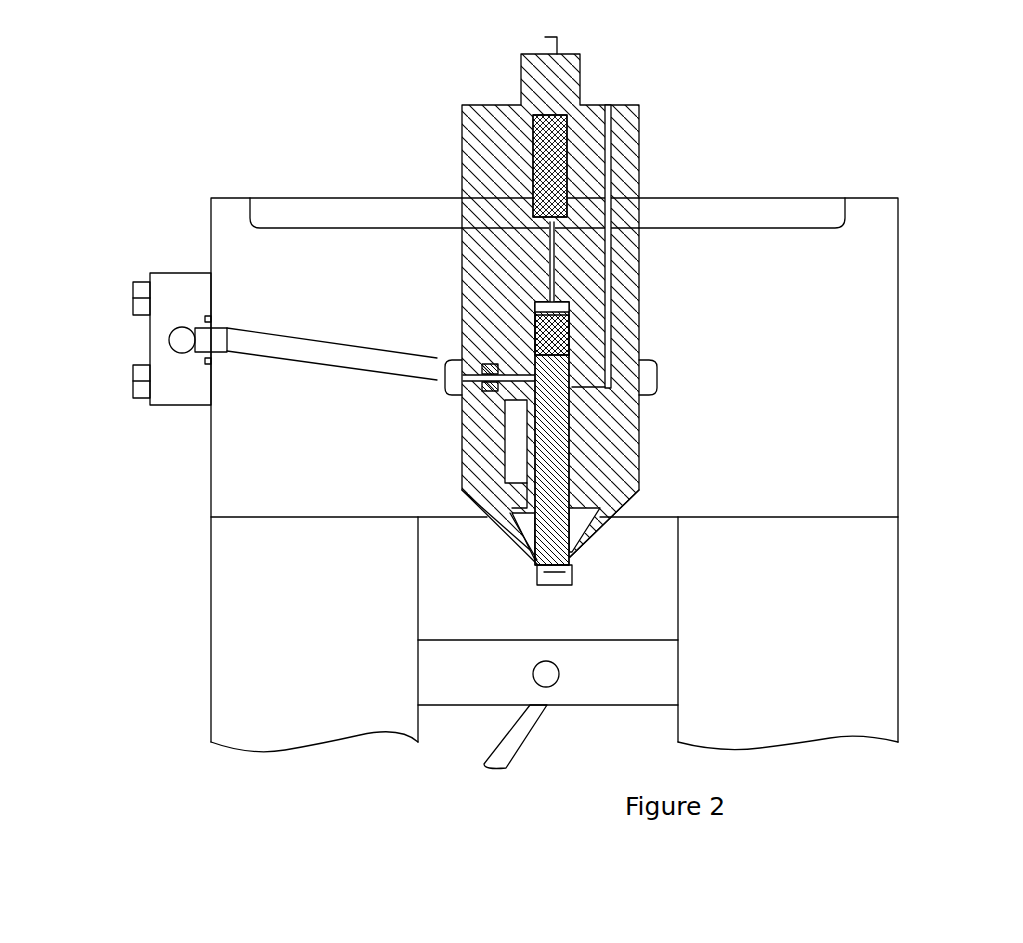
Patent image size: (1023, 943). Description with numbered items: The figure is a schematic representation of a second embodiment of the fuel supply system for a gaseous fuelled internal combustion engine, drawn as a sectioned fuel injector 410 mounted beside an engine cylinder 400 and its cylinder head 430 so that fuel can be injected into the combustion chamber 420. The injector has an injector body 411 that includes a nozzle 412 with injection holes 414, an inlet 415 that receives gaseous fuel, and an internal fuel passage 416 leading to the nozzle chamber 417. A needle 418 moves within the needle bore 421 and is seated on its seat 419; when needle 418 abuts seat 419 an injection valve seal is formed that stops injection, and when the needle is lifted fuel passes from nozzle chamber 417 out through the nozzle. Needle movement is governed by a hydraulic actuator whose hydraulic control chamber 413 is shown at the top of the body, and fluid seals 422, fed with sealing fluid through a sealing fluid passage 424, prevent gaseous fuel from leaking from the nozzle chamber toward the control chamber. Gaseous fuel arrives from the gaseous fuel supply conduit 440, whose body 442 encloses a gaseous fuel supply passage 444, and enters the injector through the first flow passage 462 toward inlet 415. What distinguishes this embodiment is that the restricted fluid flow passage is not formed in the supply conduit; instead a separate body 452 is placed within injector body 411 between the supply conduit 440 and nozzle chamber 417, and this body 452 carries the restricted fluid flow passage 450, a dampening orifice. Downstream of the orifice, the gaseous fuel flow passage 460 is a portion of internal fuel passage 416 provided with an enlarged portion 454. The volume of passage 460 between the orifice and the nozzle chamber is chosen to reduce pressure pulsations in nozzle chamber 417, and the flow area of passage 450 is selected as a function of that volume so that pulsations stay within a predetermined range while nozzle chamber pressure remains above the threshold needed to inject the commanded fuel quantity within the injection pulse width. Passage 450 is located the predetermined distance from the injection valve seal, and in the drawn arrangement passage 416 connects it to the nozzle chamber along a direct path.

The dispensing system 400 is at (198, 712).
The nozzle body 410 is at (656, 118).
The injector body 411 is at (622, 176).
The nozzle tip taper 412 is at (622, 532).
The body shoulder 413 is at (612, 308).
The nozzle outlet insert 414 is at (533, 568).
The fluid passage 415 is at (463, 370).
The internal fuel passage 416 is at (463, 412).
The nozzle chamber 417 is at (530, 527).
The needle 418 is at (556, 412).
The seat 419 is at (592, 564).
The discharge chamber 420 is at (648, 598).
The valve stem 421 is at (590, 455).
The side port 422 is at (657, 393).
The air channel 424 is at (612, 263).
The frame plate 430 is at (857, 323).
The gaseous fuel supply conduit 440 is at (182, 262).
The mounting bolts 442 is at (168, 292).
The actuator pivot 444 is at (182, 340).
The restricted fluid flow passage 450 is at (463, 398).
The separate body 452 is at (490, 350).
The enlarged portion 454 is at (518, 440).
The gaseous fuel flow passage 460 is at (335, 352).
The second seal 462 is at (502, 388).